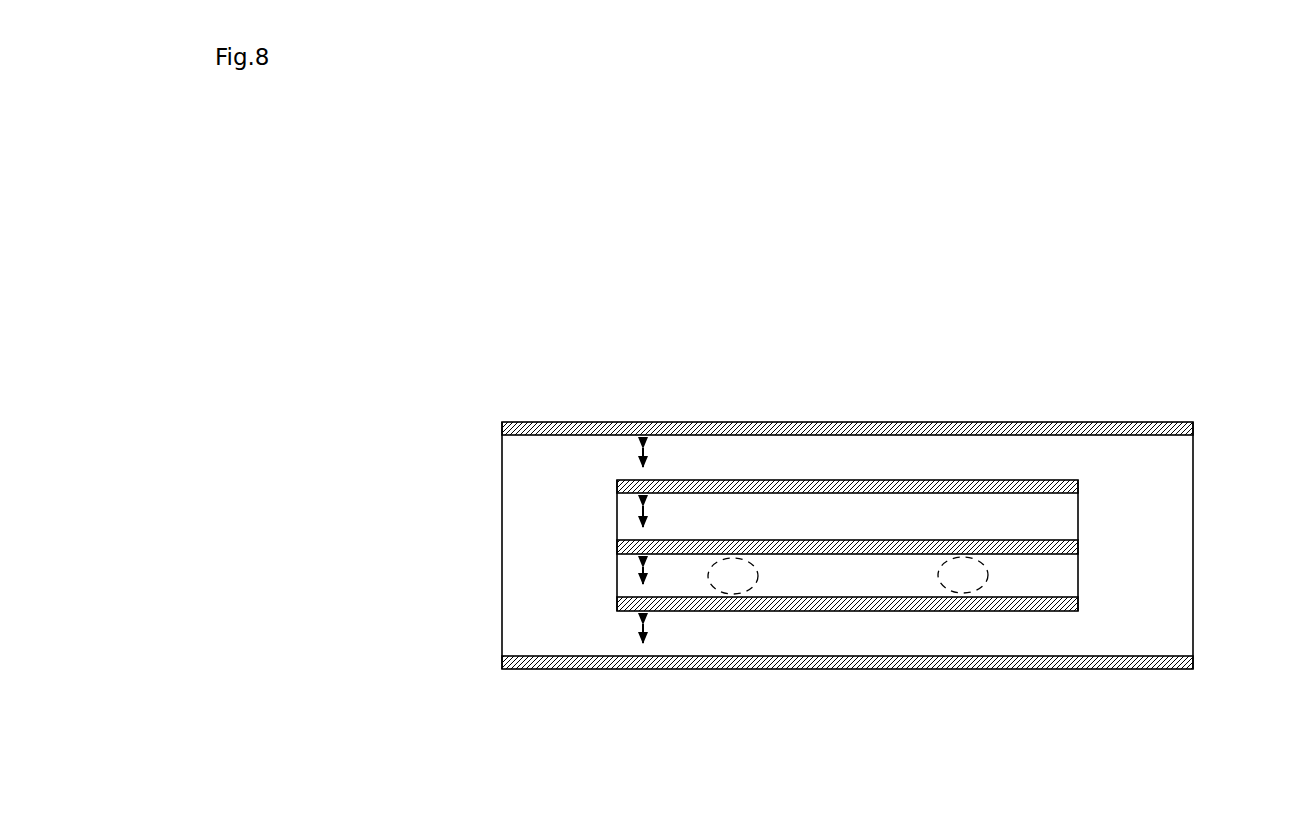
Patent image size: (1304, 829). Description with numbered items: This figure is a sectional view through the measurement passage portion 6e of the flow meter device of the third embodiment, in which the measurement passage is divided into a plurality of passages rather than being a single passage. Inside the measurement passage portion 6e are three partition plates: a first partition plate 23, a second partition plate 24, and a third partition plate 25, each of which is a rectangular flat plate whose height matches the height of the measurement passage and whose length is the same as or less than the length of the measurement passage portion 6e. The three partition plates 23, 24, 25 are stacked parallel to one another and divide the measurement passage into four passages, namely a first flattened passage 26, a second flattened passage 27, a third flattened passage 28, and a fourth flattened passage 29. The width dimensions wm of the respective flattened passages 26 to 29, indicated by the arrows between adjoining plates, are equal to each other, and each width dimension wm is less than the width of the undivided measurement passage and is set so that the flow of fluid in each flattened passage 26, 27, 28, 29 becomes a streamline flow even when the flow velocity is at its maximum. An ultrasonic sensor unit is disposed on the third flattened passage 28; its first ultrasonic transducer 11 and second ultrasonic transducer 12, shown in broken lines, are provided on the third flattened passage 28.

The measurement passage portion 6e is at (552, 422).
The first partition plate 23 is at (717, 480).
The second partition plate 24 is at (770, 540).
The third partition plate 25 is at (849, 597).
The first flattened passage 26 is at (1057, 453).
The second flattened passage 27 is at (1058, 515).
The third flattened passage 28 is at (1060, 573).
The fourth flattened passage 29 is at (1055, 629).
The first ultrasonic transducer 11 is at (750, 592).
The second ultrasonic transducer 12 is at (990, 592).
The width dimension wm is at (627, 462).